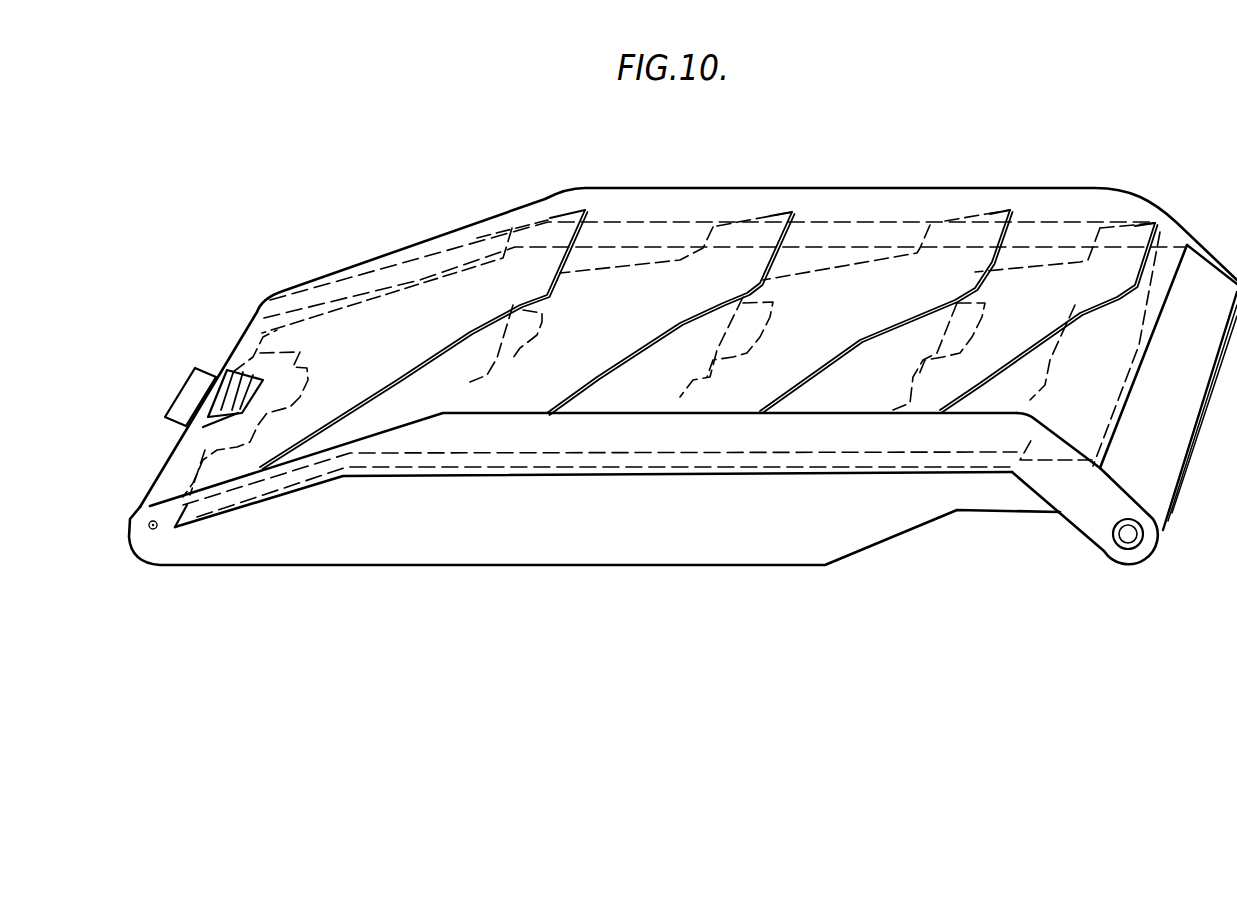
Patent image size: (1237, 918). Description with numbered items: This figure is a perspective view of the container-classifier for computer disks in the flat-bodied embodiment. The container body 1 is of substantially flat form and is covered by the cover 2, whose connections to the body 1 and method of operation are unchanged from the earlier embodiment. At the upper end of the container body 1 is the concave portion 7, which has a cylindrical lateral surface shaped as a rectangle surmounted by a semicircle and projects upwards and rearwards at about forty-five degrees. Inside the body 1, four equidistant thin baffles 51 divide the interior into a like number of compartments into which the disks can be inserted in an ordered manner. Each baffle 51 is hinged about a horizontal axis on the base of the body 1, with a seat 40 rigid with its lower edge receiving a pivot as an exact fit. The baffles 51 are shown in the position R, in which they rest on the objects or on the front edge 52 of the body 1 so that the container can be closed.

The container body 1 is at (709, 577).
The cover 2 is at (882, 180).
The concave portion 7 is at (1092, 539).
The seat 40 is at (470, 392).
The baffles 51 is at (590, 210).
The front edge 52 is at (522, 452).
The rest position R is at (553, 206).